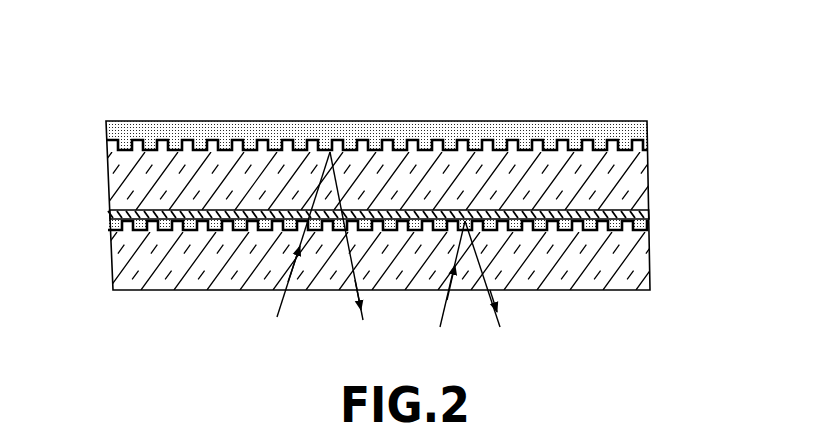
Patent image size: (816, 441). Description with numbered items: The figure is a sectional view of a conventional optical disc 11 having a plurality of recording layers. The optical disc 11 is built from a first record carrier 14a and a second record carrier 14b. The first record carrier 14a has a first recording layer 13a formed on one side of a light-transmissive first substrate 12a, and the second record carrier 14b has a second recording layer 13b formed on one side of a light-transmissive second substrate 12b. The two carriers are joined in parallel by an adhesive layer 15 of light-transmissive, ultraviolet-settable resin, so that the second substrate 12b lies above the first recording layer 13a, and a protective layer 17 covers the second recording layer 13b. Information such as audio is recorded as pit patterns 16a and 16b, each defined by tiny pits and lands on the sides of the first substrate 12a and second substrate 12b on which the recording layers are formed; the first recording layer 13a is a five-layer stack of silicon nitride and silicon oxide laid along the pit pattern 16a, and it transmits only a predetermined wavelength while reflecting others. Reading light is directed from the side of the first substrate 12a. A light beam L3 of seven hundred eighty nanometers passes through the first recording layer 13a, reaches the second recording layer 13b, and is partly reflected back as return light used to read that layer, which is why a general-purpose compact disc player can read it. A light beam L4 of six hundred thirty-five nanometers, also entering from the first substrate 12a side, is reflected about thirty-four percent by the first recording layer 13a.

The optical disc 11 is at (536, 90).
The protective layer 17 is at (646, 122).
The pit pattern 16b is at (640, 135).
The second recording layer 13b is at (643, 146).
The second substrate 12b is at (628, 177).
The adhesive layer 15 is at (648, 213).
The first recording layer 13a is at (638, 230).
The pit pattern 16a is at (593, 228).
The first substrate 12a is at (645, 280).
The second record carrier 14b is at (120, 173).
The first record carrier 14a is at (118, 267).
The light beam L3 is at (312, 250).
The light beam L4 is at (463, 290).